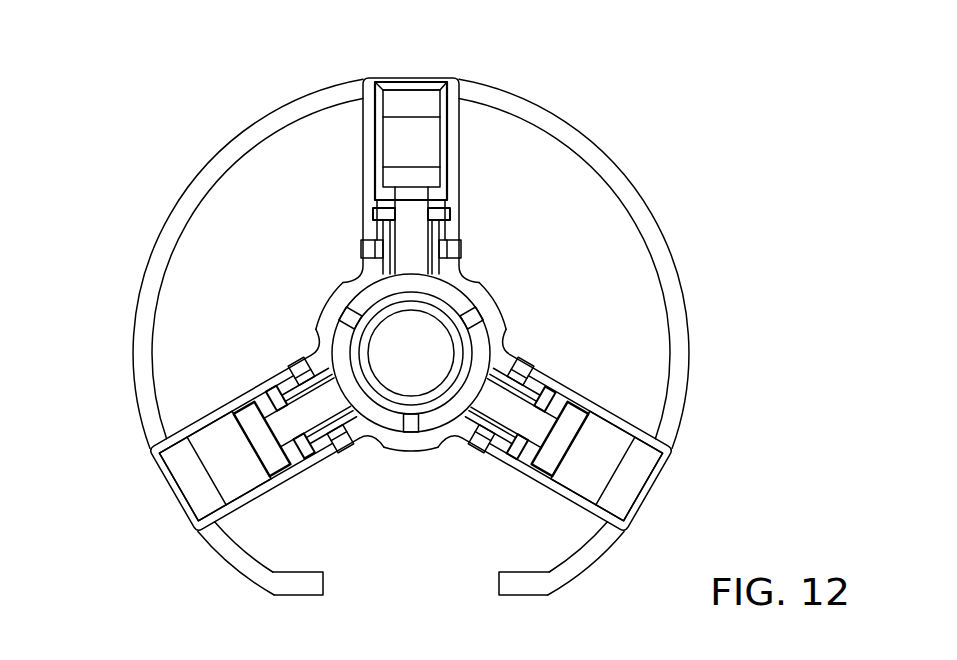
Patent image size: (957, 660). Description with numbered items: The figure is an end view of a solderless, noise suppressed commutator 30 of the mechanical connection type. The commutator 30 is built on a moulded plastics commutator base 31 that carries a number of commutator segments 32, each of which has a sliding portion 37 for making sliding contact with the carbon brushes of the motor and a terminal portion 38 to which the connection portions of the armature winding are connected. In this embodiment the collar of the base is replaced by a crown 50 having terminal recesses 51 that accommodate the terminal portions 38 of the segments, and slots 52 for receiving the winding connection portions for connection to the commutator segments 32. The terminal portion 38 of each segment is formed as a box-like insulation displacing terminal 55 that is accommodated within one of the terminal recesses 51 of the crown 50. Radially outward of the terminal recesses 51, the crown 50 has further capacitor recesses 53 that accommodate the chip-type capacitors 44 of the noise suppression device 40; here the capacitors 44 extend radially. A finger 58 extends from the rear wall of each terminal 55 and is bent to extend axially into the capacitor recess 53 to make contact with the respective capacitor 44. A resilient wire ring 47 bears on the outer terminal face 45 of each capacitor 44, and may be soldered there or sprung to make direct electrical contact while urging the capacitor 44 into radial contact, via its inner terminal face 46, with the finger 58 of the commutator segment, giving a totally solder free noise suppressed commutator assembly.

The commutator 30 is at (720, 105).
The commutator base 31 is at (505, 332).
The commutator segments 32 is at (342, 347).
The sliding portion 37 is at (458, 298).
The terminal portion 38 is at (310, 400).
The noise suppression device 40 is at (374, 81).
The capacitors 44 is at (415, 140).
The outer terminal face 45 is at (395, 102).
The inner terminal face 46 is at (417, 180).
The wire ring 47 is at (212, 552).
The crown 50 is at (364, 158).
The terminal recesses 51 is at (447, 230).
The slots 52 is at (455, 253).
The capacitor recesses 53 is at (420, 103).
The terminal 55 is at (412, 235).
The finger 58 is at (413, 203).